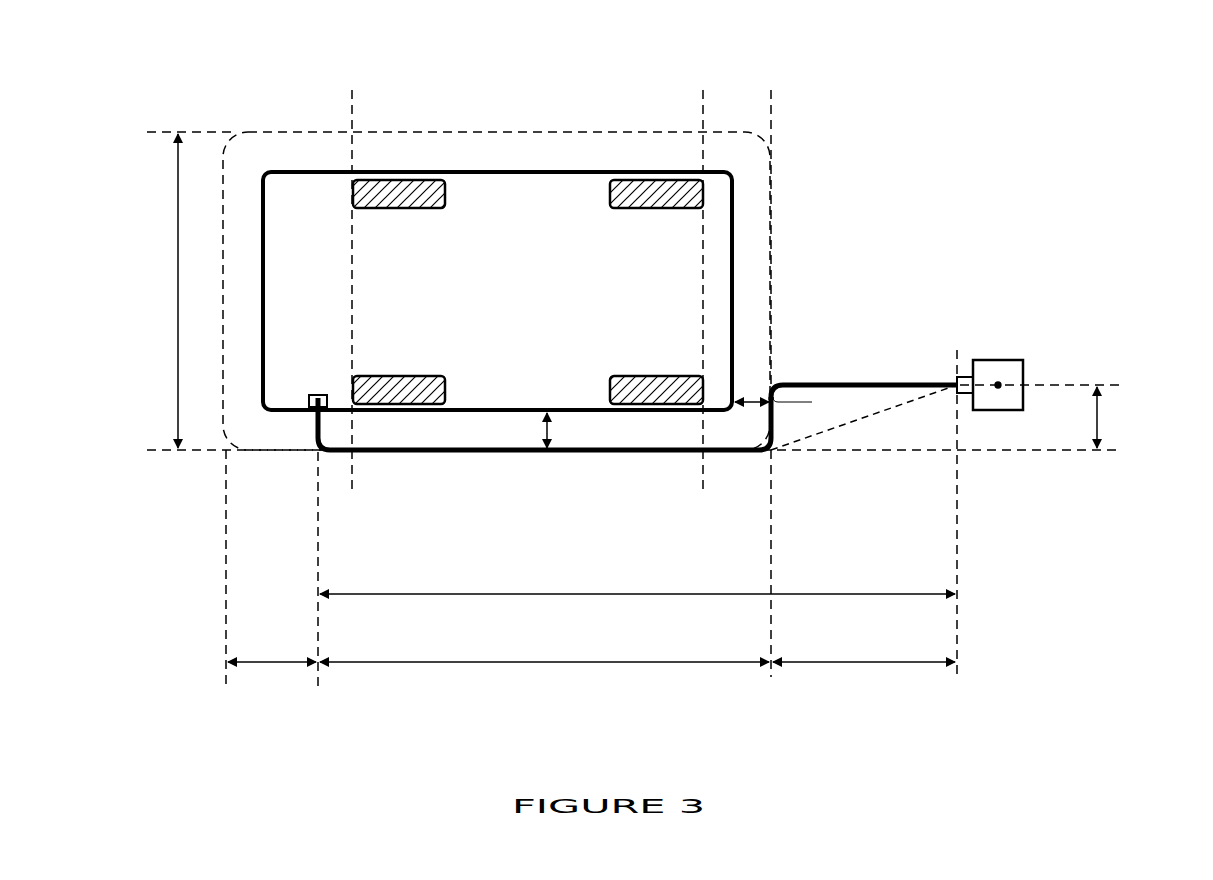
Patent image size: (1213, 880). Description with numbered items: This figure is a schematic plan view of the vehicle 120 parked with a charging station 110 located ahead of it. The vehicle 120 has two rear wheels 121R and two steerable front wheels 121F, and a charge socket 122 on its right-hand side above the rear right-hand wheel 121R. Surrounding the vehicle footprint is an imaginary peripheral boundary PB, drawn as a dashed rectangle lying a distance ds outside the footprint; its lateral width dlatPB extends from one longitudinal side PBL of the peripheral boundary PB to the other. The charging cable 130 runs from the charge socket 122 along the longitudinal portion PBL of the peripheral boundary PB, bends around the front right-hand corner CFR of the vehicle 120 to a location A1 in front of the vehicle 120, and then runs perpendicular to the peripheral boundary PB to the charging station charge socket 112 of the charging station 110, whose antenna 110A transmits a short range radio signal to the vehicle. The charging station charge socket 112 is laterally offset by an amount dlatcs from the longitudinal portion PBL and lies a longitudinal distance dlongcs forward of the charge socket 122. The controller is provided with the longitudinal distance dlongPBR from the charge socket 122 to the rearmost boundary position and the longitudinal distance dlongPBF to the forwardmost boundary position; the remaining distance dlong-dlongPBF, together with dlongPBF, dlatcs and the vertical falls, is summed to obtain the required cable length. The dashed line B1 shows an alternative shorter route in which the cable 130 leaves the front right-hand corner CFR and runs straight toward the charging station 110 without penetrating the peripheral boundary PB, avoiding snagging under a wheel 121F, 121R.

The vehicle 120 is at (850, 182).
The rear wheels 121R is at (400, 385).
The steerable front wheels 121F is at (640, 385).
The charge socket 122 is at (309, 403).
The charging cable 130 is at (872, 383).
The charging station 110 is at (1052, 372).
The antenna 110A is at (999, 384).
The charging station charge socket 112 is at (965, 395).
The peripheral boundary PB is at (435, 130).
The longitudinal portion of the peripheral boundary PBL is at (487, 453).
The location in front of the vehicle A1 is at (812, 402).
The dashed line route B1 is at (837, 428).
The front right-hand corner CFR is at (735, 407).
The distance outside footprint ds is at (752, 398).
The lateral width of the peripheral boundary dlatPB is at (140, 291).
The lateral offset of charging station charge socket dlatcs is at (1131, 417).
The longitudinal distance to charging station socket dlongcs is at (637, 578).
The longitudinal distance to forwardmost boundary position dlongPBF is at (544, 646).
The longitudinal distance to rearmost boundary position dlongPBR is at (273, 665).
The remaining longitudinal distance dlong-dlongPBF is at (865, 665).